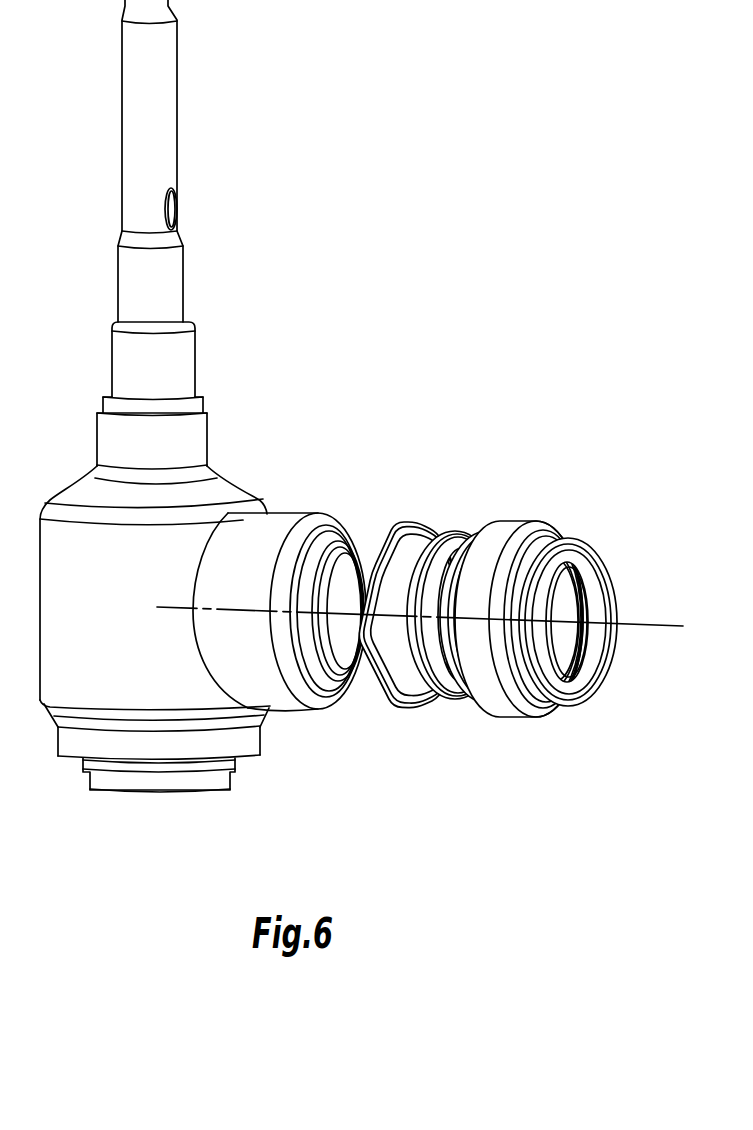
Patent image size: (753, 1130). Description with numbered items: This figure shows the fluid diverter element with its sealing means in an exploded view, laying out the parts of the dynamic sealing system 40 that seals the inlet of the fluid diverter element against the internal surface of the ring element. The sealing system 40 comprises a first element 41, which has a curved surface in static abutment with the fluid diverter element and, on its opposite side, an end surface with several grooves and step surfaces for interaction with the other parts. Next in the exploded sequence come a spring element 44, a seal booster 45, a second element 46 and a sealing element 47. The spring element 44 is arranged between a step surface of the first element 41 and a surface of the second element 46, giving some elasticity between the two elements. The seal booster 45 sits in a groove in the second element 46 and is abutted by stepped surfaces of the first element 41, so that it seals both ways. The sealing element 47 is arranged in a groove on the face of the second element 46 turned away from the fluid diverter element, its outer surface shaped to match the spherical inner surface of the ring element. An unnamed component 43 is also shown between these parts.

The sealing system 40 is at (448, 418).
The first element 41 is at (286, 521).
The hexagonal gasket ring 43 is at (349, 508).
The spring element 44 is at (418, 707).
The seal booster 45 is at (471, 533).
The second element 46 is at (527, 709).
The sealing element 47 is at (604, 673).